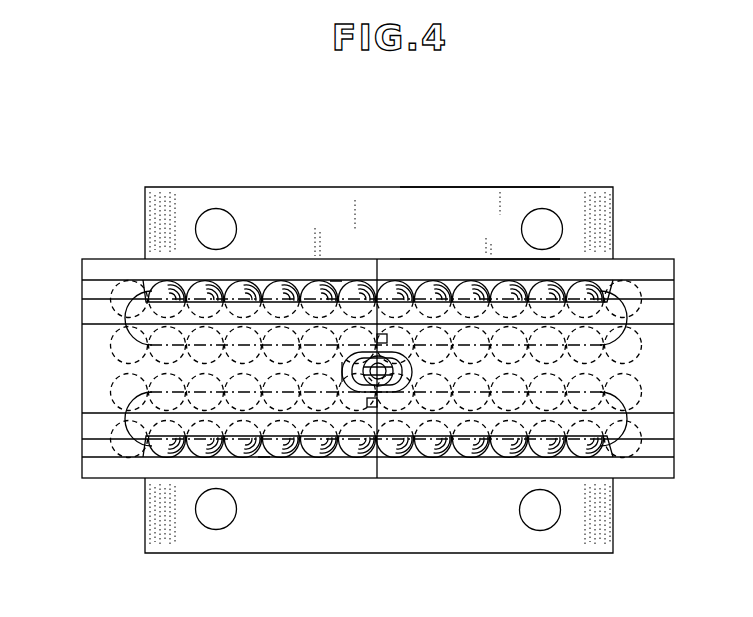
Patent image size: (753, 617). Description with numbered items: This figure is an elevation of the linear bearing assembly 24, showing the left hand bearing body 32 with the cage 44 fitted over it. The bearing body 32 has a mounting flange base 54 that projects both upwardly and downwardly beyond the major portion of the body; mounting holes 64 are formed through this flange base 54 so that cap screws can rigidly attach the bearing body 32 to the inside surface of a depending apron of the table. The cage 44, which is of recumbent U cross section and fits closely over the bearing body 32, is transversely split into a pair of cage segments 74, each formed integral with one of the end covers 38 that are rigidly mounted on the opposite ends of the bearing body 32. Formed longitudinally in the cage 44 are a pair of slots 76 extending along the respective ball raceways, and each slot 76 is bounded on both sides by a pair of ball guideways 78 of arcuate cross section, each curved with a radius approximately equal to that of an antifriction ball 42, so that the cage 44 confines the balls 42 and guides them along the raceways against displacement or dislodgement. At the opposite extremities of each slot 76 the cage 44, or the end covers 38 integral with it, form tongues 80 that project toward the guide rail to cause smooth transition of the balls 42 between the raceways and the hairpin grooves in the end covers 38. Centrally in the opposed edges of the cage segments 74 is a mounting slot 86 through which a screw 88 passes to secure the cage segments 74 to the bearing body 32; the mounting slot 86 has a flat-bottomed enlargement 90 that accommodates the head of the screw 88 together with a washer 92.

The linear bearing assembly 24 is at (379, 352).
The bearing body 32 is at (481, 188).
The end covers 38 is at (82, 287).
The antifriction balls 42 is at (245, 281).
The cage 44 is at (474, 260).
The mounting flange base 54 is at (379, 365).
The mounting holes 64 is at (214, 221).
The cage segments 74 is at (269, 281).
The slots 76 is at (336, 283).
The ball guideways 78 is at (416, 283).
The tongues 80 is at (140, 285).
The mounting slot 86 is at (389, 423).
The screw 88 is at (372, 394).
The flat-bottomed enlargement 90 is at (346, 364).
The washer 92 is at (383, 394).